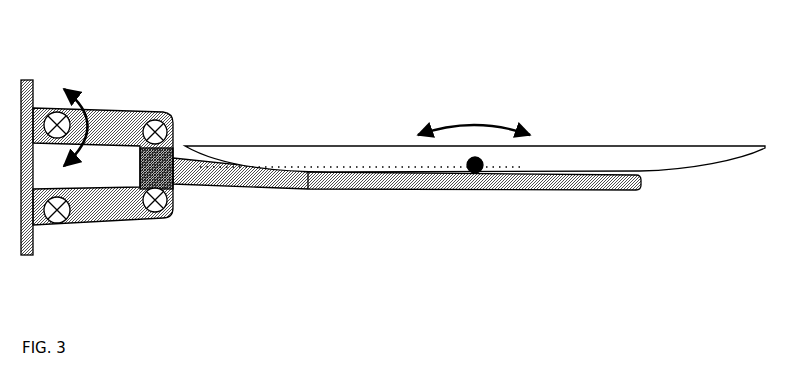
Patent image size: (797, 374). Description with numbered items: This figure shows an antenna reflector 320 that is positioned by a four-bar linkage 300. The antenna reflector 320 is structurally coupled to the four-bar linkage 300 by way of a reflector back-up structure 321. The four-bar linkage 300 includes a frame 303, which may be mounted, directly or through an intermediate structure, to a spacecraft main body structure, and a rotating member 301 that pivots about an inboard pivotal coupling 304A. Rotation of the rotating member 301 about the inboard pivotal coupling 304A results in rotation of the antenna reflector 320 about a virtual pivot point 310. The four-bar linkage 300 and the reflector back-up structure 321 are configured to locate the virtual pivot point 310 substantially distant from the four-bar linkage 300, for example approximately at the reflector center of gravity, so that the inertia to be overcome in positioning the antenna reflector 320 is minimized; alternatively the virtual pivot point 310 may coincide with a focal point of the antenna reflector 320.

The four-bar linkage 300 is at (217, 102).
The rotating member 301 is at (107, 110).
The frame 303 is at (35, 247).
The inboard pivotal coupling 304A is at (52, 108).
The virtual pivot point 310 is at (480, 173).
The antenna reflector 320 is at (475, 148).
The reflector back-up structure 321 is at (348, 190).